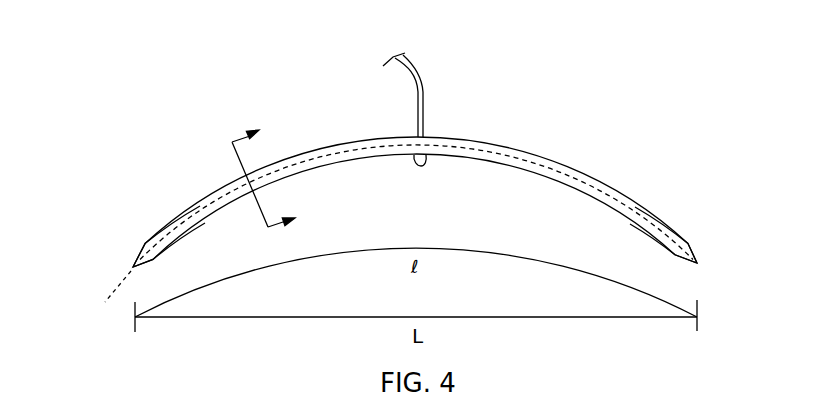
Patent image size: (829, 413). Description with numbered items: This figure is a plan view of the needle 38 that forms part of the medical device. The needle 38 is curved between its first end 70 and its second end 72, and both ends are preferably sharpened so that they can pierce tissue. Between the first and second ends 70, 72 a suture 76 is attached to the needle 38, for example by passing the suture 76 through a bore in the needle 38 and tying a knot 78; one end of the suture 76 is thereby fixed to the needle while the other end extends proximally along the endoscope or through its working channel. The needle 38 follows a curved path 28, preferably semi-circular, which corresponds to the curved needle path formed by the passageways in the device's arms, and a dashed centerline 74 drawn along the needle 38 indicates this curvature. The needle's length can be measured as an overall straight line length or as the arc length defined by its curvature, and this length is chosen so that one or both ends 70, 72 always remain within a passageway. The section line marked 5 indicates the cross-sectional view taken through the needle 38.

The needle 38 is at (520, 157).
The first end 70 is at (193, 203).
The second end 72 is at (658, 217).
The centerline of implant 74 is at (540, 167).
The suture 76 is at (425, 87).
The knot 78 is at (425, 166).
The curved path 28 is at (118, 290).
The section line 5- 5 is at (261, 183).